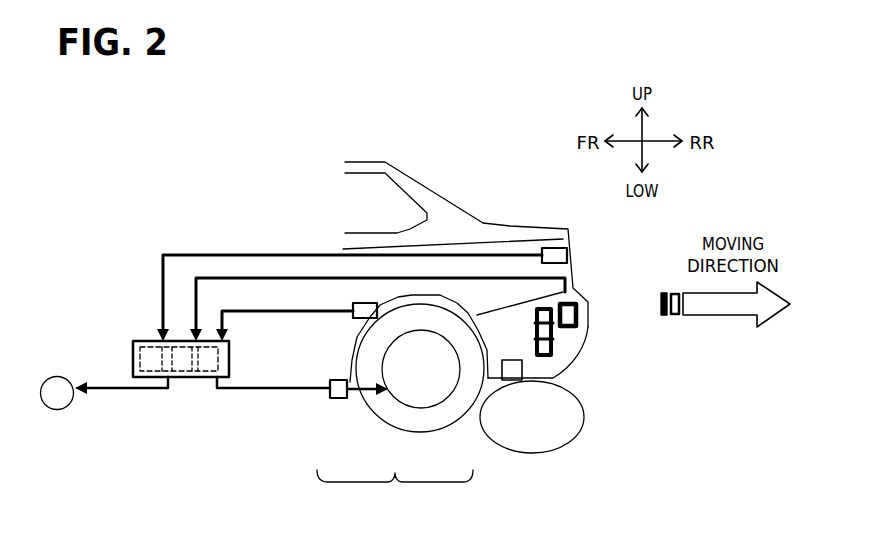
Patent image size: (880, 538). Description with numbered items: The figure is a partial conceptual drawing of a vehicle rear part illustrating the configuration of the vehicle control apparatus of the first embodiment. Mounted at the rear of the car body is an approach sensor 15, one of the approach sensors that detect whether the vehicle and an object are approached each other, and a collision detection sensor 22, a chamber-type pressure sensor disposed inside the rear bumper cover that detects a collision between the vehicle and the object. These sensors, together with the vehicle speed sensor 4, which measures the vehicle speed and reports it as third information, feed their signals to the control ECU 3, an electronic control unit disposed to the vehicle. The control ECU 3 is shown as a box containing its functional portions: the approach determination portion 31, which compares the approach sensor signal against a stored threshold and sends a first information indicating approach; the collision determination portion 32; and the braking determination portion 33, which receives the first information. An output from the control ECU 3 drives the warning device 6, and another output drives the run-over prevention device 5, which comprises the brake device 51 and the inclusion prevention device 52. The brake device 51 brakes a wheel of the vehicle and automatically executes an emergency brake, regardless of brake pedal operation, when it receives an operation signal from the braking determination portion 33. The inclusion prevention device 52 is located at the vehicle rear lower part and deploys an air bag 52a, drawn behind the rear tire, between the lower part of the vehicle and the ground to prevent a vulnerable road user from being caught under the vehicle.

The control ECU 3 is at (133, 357).
The approach determination portion 31 is at (148, 339).
The collision determination portion 32 is at (178, 380).
The braking determination portion 33 is at (213, 380).
The vehicle speed sensor 4 is at (365, 312).
The run-over prevention device 5 is at (395, 496).
The brake device 51 is at (338, 400).
The inclusion prevention device 52 is at (512, 382).
The air bag 52a is at (533, 442).
The warning device 6 is at (57, 410).
The approach sensor 15 is at (555, 255).
The collision detection sensor 22 is at (570, 326).